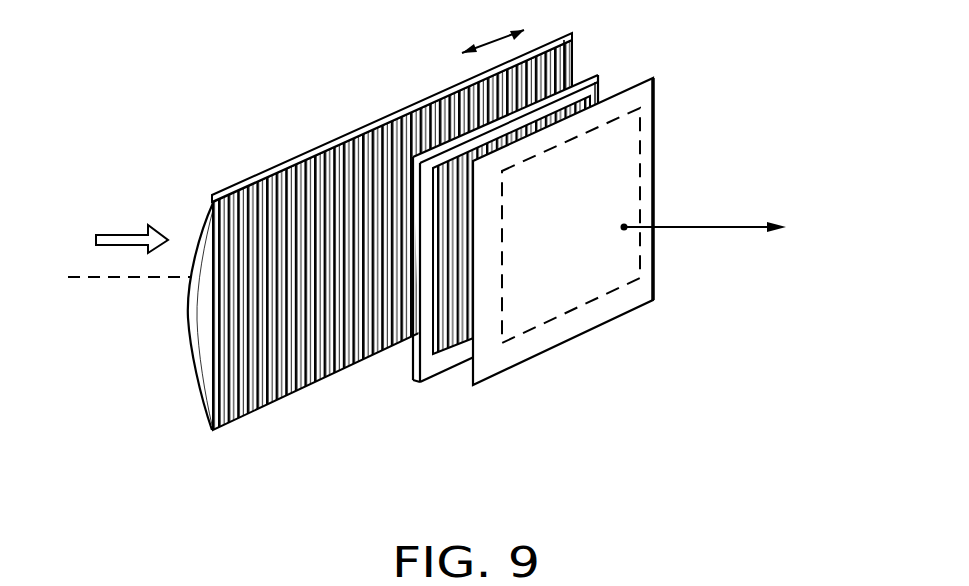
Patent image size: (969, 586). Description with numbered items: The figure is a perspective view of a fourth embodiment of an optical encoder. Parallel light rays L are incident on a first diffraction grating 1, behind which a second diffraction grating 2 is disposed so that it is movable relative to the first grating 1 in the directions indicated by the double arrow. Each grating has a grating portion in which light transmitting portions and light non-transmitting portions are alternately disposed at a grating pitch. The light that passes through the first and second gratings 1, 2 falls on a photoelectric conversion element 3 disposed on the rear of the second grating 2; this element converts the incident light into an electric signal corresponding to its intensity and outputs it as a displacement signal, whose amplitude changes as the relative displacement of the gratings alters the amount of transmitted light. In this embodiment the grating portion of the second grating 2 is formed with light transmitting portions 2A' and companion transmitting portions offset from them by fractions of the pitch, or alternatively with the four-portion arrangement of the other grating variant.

The first diffraction grating 1 is at (381, 119).
The second diffraction grating 2 is at (595, 237).
The light transmitting portions 2A' is at (595, 277).
The photoelectric conversion element 3 is at (654, 77).
The parallel light rays L is at (105, 281).